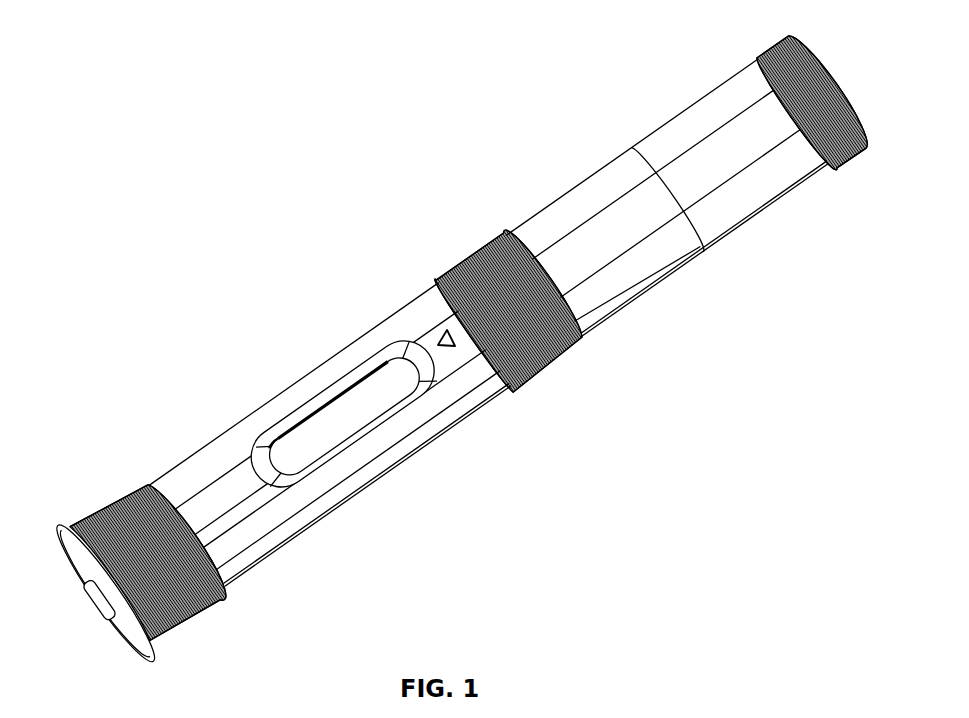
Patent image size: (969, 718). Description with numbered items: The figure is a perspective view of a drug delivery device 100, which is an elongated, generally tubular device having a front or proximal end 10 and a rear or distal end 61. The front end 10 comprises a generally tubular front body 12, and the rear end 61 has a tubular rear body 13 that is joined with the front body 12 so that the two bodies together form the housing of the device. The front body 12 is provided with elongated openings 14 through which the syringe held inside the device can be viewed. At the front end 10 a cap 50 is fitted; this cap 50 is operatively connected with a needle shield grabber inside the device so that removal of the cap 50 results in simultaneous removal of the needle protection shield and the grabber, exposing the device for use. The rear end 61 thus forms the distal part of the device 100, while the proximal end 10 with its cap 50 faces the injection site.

The front or proximal end 10 is at (73, 651).
The front body 12 is at (182, 462).
The rear body 13 is at (567, 191).
The elongated openings 14 is at (320, 375).
The cap 50 is at (188, 624).
The rear or distal end 61 is at (872, 60).
The drug delivery device 100 is at (489, 458).